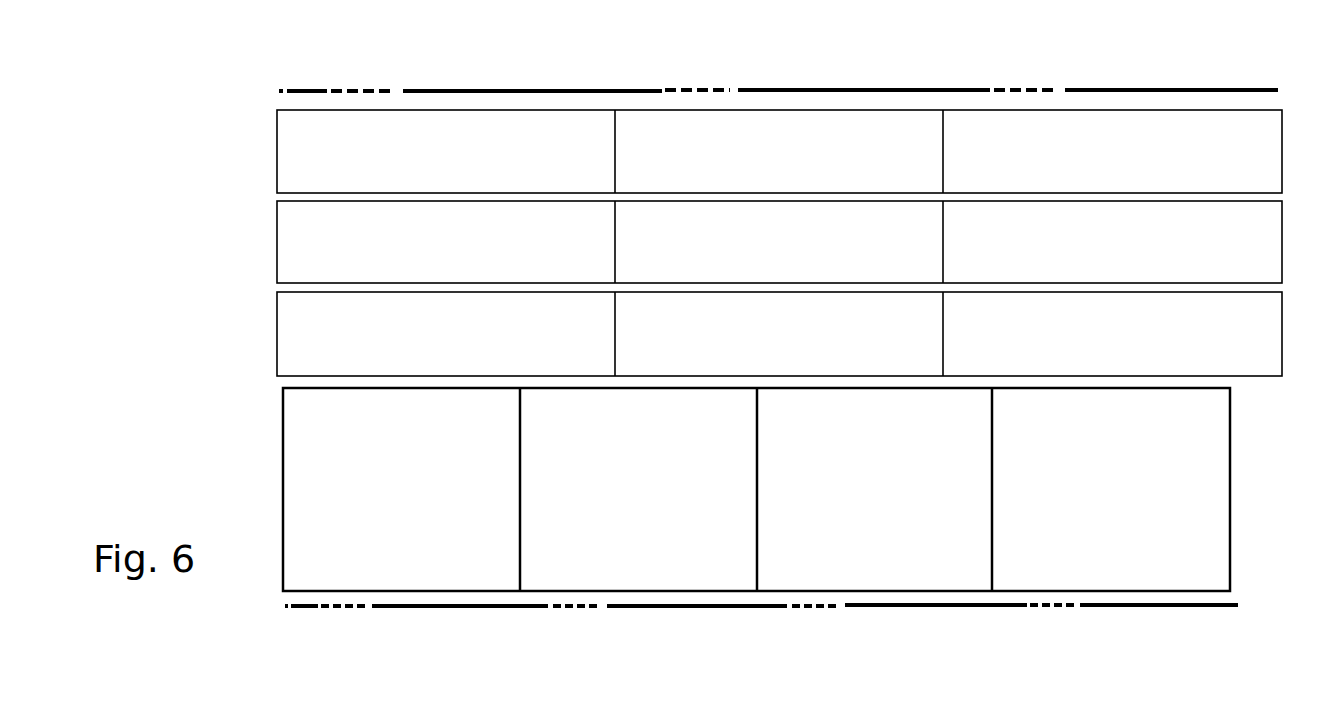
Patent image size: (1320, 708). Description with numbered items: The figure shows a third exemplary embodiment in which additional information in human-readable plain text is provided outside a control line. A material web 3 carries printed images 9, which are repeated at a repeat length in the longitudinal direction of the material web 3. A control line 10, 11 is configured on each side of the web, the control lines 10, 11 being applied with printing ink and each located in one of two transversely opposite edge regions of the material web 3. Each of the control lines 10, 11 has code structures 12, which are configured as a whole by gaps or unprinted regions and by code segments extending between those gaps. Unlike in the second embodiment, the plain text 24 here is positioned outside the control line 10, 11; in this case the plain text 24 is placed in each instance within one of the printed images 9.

The material web 3 is at (265, 182).
The printed images 9 is at (502, 175).
The control line 10 is at (477, 88).
The control line 11 is at (1236, 602).
The code structures 12 is at (693, 80).
The plain text 24 is at (763, 138).